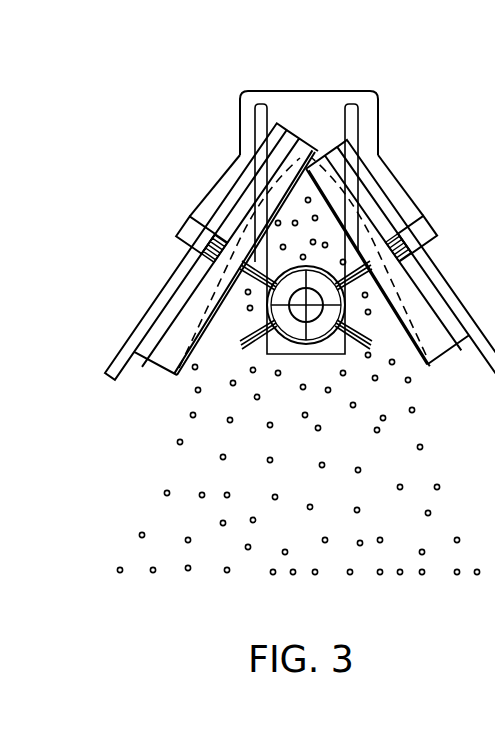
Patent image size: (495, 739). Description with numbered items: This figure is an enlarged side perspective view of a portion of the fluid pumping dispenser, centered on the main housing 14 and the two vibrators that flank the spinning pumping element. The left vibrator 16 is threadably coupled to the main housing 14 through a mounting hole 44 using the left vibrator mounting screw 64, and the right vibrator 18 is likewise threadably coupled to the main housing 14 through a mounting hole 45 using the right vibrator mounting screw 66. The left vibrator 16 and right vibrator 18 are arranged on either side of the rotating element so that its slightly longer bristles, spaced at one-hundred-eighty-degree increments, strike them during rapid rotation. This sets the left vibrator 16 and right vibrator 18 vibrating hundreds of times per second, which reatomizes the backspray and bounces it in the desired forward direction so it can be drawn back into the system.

The main housing 14 is at (330, 91).
The left vibrator 16 is at (156, 376).
The right vibrator 18 is at (447, 352).
The mounting hole 44 is at (198, 220).
The mounting hole 45 is at (422, 245).
The left vibrator mounting screw 64 is at (178, 233).
The right vibrator mounting screw 66 is at (428, 222).